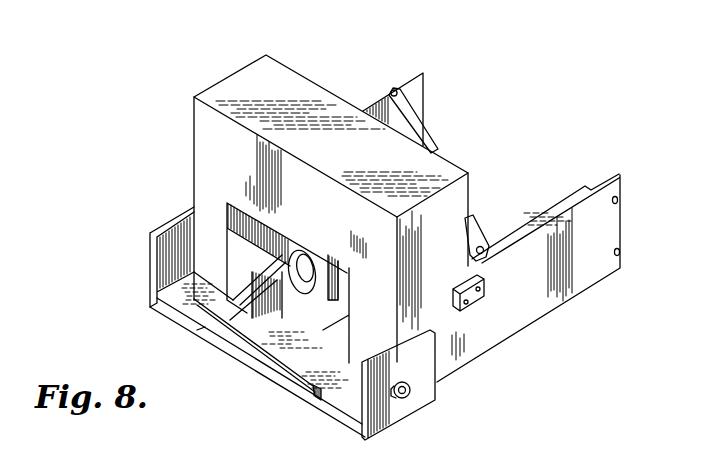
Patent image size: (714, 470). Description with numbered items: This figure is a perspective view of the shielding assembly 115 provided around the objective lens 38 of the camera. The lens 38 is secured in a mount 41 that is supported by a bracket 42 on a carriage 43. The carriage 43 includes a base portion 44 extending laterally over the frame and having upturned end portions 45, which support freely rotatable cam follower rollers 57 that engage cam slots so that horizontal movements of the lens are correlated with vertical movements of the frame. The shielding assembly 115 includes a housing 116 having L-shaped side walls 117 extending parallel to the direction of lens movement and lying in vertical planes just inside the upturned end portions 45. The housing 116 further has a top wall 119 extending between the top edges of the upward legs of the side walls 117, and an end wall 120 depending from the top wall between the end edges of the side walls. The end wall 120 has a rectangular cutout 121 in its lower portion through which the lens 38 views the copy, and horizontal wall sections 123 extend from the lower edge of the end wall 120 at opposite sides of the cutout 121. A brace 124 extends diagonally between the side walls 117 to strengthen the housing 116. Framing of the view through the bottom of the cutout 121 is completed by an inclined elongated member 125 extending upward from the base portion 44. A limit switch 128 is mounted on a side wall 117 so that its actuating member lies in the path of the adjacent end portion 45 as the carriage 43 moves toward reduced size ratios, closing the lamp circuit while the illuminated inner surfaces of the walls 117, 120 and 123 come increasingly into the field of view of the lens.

The shielding assembly 115 is at (183, 139).
The housing 116 is at (253, 63).
The top wall 119 is at (297, 82).
The end wall 120 is at (200, 177).
The L-shaped side walls 117 is at (415, 102).
The brace 124 is at (418, 138).
The limit switch 128 is at (486, 283).
The upturned end portions 45 is at (150, 252).
The cam follower rollers 57 is at (396, 399).
The carriage 43 is at (314, 410).
The base portion 44 is at (178, 300).
The inclined elongated member 125 is at (197, 330).
The bracket 42 is at (292, 380).
The rectangular cutout 121 is at (235, 298).
The horizontal wall sections 123 is at (231, 322).
The objective lens 38 is at (292, 250).
The mount 41 is at (324, 262).